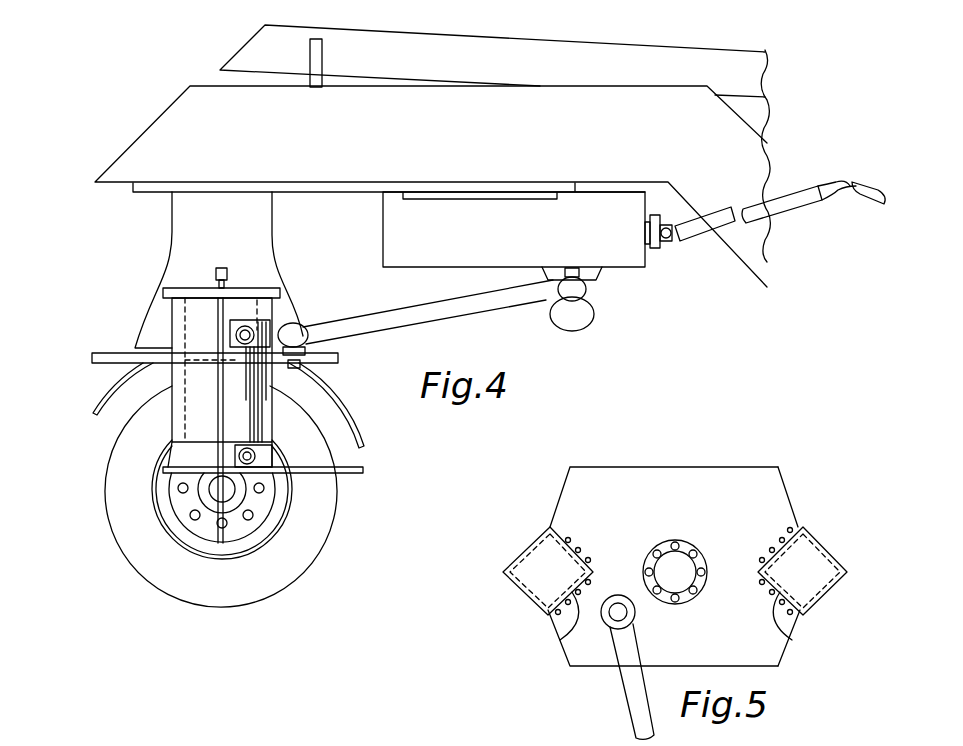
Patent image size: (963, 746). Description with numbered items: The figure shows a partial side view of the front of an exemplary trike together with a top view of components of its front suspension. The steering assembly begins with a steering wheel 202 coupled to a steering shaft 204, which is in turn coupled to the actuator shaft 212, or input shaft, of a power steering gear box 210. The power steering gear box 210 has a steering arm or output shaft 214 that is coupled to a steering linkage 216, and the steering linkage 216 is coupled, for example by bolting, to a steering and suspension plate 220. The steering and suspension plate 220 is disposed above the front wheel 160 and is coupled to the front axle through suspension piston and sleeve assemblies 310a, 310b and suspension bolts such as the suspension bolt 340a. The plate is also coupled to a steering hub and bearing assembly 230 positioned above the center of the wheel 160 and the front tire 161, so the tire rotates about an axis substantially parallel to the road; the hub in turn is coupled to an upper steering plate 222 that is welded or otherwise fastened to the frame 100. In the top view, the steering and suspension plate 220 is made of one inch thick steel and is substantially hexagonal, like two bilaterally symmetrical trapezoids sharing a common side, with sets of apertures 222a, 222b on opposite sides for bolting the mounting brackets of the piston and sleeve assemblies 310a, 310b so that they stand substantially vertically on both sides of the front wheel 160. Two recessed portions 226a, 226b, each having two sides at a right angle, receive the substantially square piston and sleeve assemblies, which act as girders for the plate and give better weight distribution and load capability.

In FIG. 4, the frame 100 is at (233, 42).
In FIG. 4, the steering wheel 202 is at (855, 180).
In FIG. 4, the steering shaft 204 is at (780, 206).
In FIG. 4, the power steering gear box 210 is at (541, 243).
In FIG. 4, the actuator shaft 212 is at (656, 246).
In FIG. 4, the steering arm 214 is at (590, 276).
In FIG. 4, the steering linkage 216 is at (455, 327).
In FIG. 5, the steering linkage 216 is at (628, 694).
In FIG. 4, the steering and suspension plate 220 is at (117, 352).
In FIG. 4, the upper steering plate 222 is at (147, 193).
In FIG. 5, the apertures 222a is at (558, 530).
In FIG. 5, the apertures 222b is at (798, 530).
In FIG. 5, the recessed portion 226a is at (560, 635).
In FIG. 5, the recessed portion 226b is at (792, 636).
In FIG. 4, the steering hub and bearing assembly 230 is at (270, 230).
In FIG. 5, the steering hub and bearing assembly 230 is at (680, 540).
In FIG. 4, the suspension piston and sleeve assembly 310a is at (278, 295).
In FIG. 5, the suspension piston and sleeve assembly 310a is at (518, 558).
In FIG. 5, the suspension piston and sleeve assembly 310b is at (835, 558).
In FIG. 4, the suspension bolt 340a is at (267, 397).
In FIG. 4, the front wheel 160 is at (322, 544).
In FIG. 4, the front tire 161 is at (330, 496).